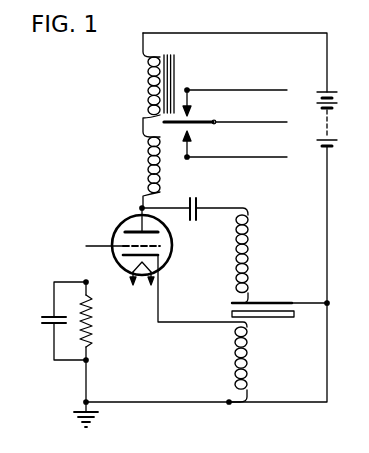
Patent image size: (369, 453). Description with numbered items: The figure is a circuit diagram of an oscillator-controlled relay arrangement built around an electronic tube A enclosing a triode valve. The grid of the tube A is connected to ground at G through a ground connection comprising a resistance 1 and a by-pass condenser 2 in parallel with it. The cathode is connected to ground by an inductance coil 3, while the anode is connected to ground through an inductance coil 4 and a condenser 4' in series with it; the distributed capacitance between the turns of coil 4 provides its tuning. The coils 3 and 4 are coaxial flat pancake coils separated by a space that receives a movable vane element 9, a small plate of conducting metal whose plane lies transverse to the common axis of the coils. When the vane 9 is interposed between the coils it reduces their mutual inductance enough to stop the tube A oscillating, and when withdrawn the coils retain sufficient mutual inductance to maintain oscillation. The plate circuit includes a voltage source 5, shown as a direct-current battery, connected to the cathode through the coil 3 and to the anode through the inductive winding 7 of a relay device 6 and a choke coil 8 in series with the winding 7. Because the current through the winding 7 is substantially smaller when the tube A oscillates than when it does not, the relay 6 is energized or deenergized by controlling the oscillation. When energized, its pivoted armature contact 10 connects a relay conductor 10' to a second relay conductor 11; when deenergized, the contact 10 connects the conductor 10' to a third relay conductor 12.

The resistance 1 is at (94, 323).
The by-pass condenser 2 is at (42, 318).
The inductance coil 3 is at (238, 350).
The inductance coil 4 is at (228, 254).
The condenser 4' is at (205, 196).
The voltage source 5 is at (336, 124).
The relay device 6 is at (178, 77).
The inductive winding 7 is at (147, 83).
The choke coil 8 is at (147, 162).
The movable vane element 9 is at (264, 318).
The pivoted armature contact 10 is at (196, 109).
The relay conductor 10' is at (251, 110).
The second relay conductor 11 is at (253, 90).
The third relay conductor 12 is at (257, 158).
The electronic tube A is at (117, 219).
The ground G is at (76, 420).